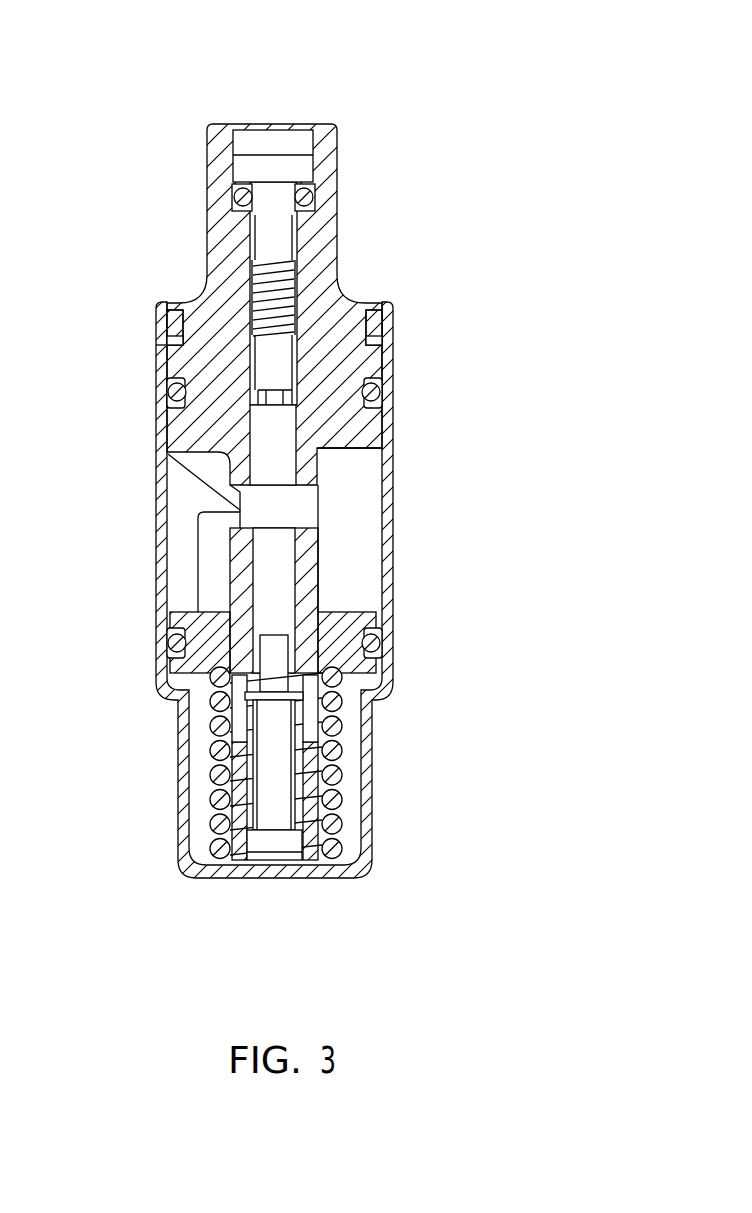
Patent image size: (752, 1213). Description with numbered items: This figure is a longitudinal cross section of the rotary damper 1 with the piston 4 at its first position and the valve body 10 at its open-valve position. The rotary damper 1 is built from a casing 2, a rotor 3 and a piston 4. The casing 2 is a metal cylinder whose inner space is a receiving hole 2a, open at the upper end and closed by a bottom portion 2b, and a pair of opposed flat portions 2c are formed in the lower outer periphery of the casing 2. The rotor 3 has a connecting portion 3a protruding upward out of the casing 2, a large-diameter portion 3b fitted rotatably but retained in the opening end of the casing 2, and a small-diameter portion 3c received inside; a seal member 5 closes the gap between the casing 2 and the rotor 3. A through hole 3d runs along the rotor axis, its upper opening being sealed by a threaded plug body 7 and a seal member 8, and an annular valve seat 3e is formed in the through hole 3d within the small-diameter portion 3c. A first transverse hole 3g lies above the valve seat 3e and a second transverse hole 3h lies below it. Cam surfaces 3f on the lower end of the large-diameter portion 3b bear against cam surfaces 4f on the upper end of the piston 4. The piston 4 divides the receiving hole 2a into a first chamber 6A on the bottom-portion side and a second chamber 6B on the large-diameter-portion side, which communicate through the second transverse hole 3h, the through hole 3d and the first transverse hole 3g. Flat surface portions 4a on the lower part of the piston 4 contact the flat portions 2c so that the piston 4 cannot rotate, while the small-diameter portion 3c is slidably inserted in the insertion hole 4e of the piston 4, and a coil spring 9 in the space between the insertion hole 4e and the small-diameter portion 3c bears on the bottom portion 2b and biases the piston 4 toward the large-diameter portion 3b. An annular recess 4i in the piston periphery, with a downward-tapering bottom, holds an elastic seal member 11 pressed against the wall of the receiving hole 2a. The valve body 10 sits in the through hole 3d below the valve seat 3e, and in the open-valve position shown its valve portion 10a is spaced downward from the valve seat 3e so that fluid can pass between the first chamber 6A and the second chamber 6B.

The rotary damper 1 is at (406, 169).
The casing 2 is at (394, 503).
The receiving hole 2a is at (384, 470).
The bottom portion 2b is at (265, 880).
The flat portions 2c is at (180, 817).
The rotor 3 is at (335, 125).
The connecting portion 3a is at (338, 207).
The large-diameter portion 3b is at (386, 367).
The small-diameter portion 3c is at (318, 584).
The through hole 3d is at (270, 430).
The valve seat 3e is at (262, 677).
The cam surfaces 3f is at (234, 495).
The first transverse hole 3g is at (238, 505).
The second transverse hole 3h is at (240, 738).
The piston 4 is at (300, 690).
The flat surface portions 4a is at (235, 812).
The insertion hole 4e is at (236, 607).
The cam surfaces 4f is at (318, 556).
The annular recess 4i is at (376, 657).
The seal member 5 is at (172, 392).
The first chamber 6A is at (372, 690).
The second chamber 6B is at (176, 478).
The plug body 7 is at (276, 168).
The seal member 8 is at (242, 196).
The coil spring 9 is at (350, 812).
The valve body 10 is at (272, 782).
The valve portion 10a is at (245, 703).
The seal member 11 is at (178, 643).